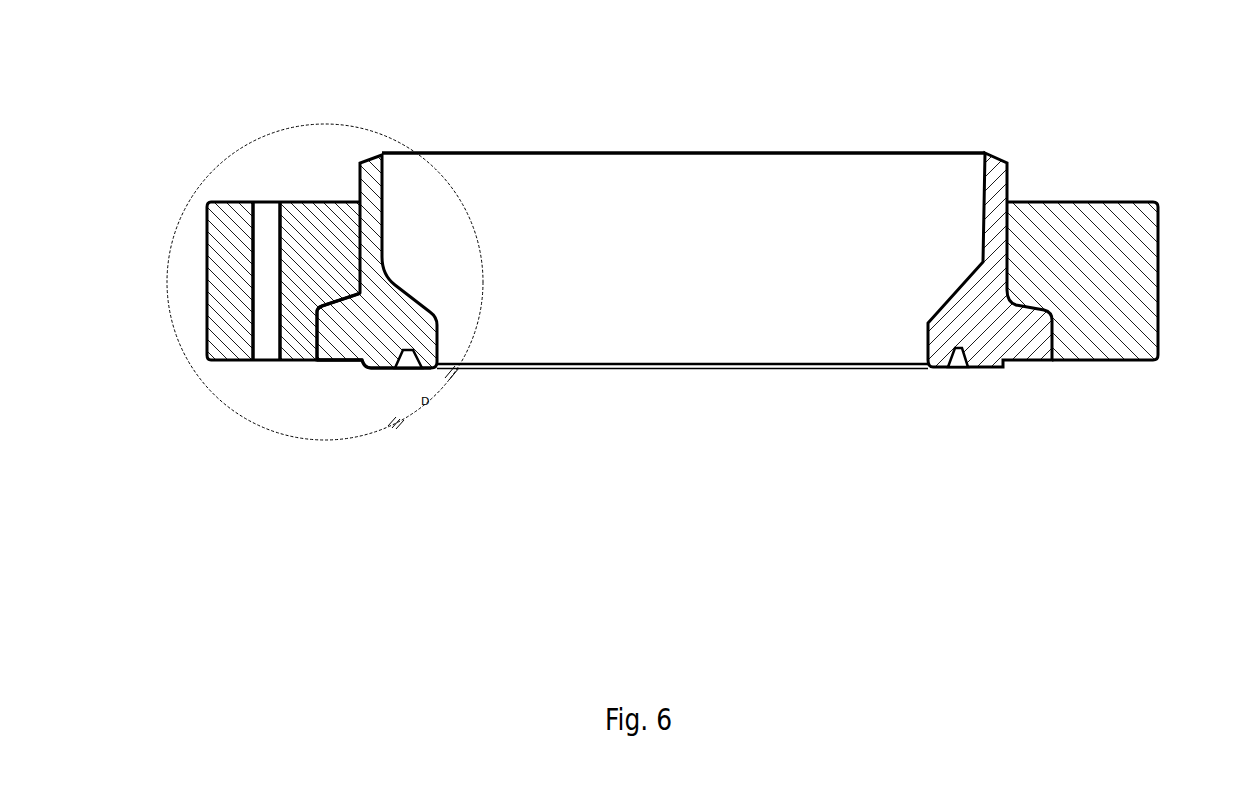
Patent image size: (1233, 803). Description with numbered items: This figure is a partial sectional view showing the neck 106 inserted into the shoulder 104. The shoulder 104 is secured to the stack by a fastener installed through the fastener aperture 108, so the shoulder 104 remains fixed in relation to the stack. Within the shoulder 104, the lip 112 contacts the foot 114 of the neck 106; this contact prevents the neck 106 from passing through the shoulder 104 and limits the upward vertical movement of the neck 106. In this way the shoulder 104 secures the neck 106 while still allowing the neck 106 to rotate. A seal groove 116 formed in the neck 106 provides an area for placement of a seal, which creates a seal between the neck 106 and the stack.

The shoulder 104 is at (1080, 190).
The neck 106 is at (992, 158).
The fastener aperture 108 is at (266, 215).
The lip 112 is at (333, 300).
The foot 114 is at (340, 328).
The seal groove 116 is at (958, 360).